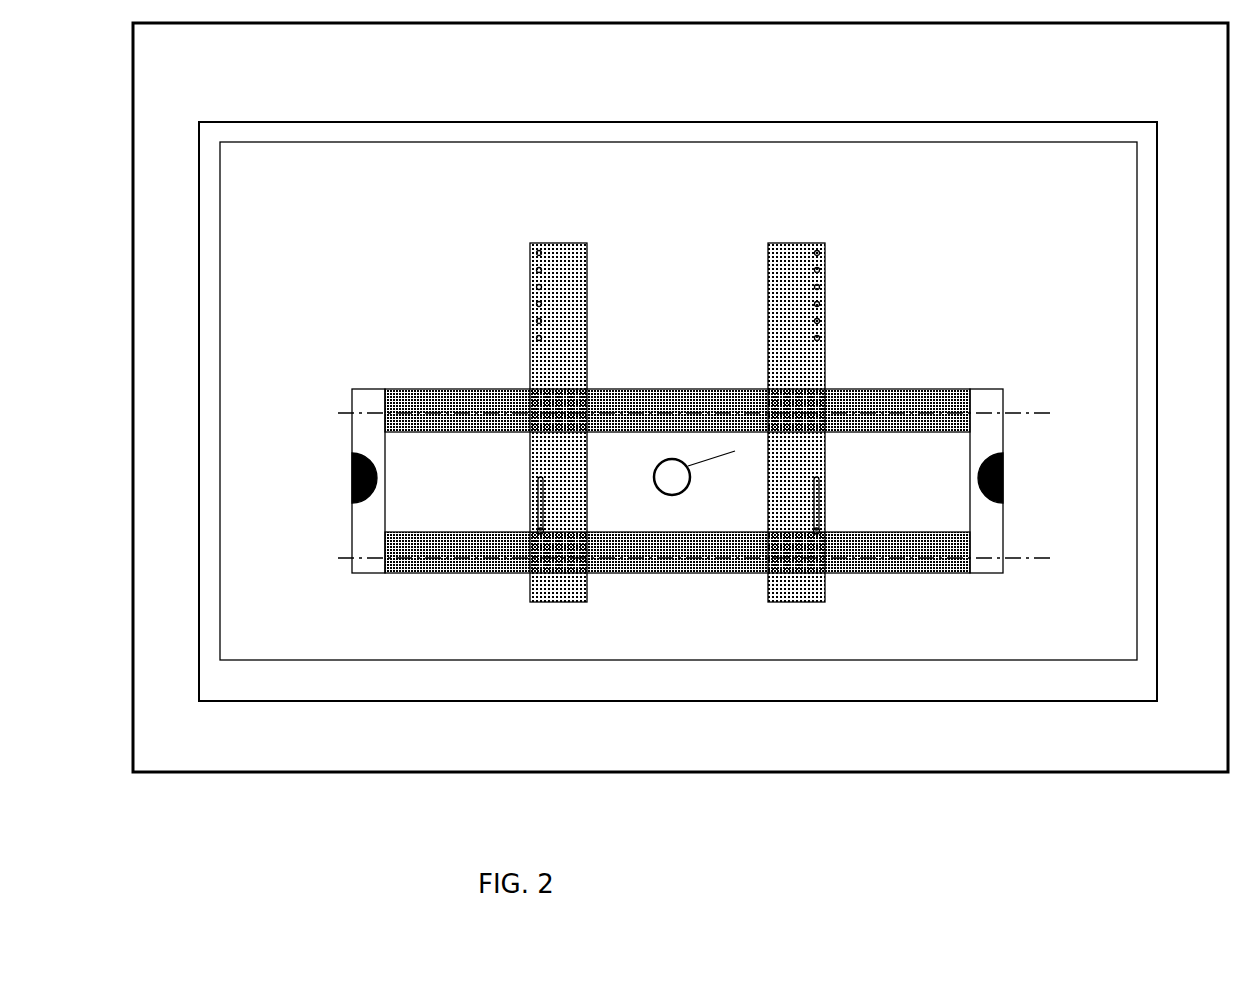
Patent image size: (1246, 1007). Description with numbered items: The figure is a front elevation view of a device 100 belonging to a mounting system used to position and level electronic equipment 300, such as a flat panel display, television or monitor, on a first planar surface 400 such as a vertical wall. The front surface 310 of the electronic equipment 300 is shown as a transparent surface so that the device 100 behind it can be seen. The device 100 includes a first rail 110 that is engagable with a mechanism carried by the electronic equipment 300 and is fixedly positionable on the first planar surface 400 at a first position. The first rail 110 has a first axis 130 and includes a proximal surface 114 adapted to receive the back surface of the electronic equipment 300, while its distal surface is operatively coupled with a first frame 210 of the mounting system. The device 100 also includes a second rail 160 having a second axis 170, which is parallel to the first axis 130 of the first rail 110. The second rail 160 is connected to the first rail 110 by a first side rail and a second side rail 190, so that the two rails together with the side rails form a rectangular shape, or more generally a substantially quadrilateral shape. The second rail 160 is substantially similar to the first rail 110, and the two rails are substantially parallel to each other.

The device 100 is at (903, 290).
The first rail 110 is at (726, 388).
The proximal surface 114 is at (960, 388).
The first axis 130 is at (1024, 410).
The second rail 160 is at (692, 531).
The second axis 170 is at (1046, 554).
The second side rail 190 is at (359, 441).
The first frame 210 is at (576, 289).
The electronic equipment 300 is at (871, 147).
The front surface 310 is at (382, 308).
The first planar surface 400 is at (1130, 772).